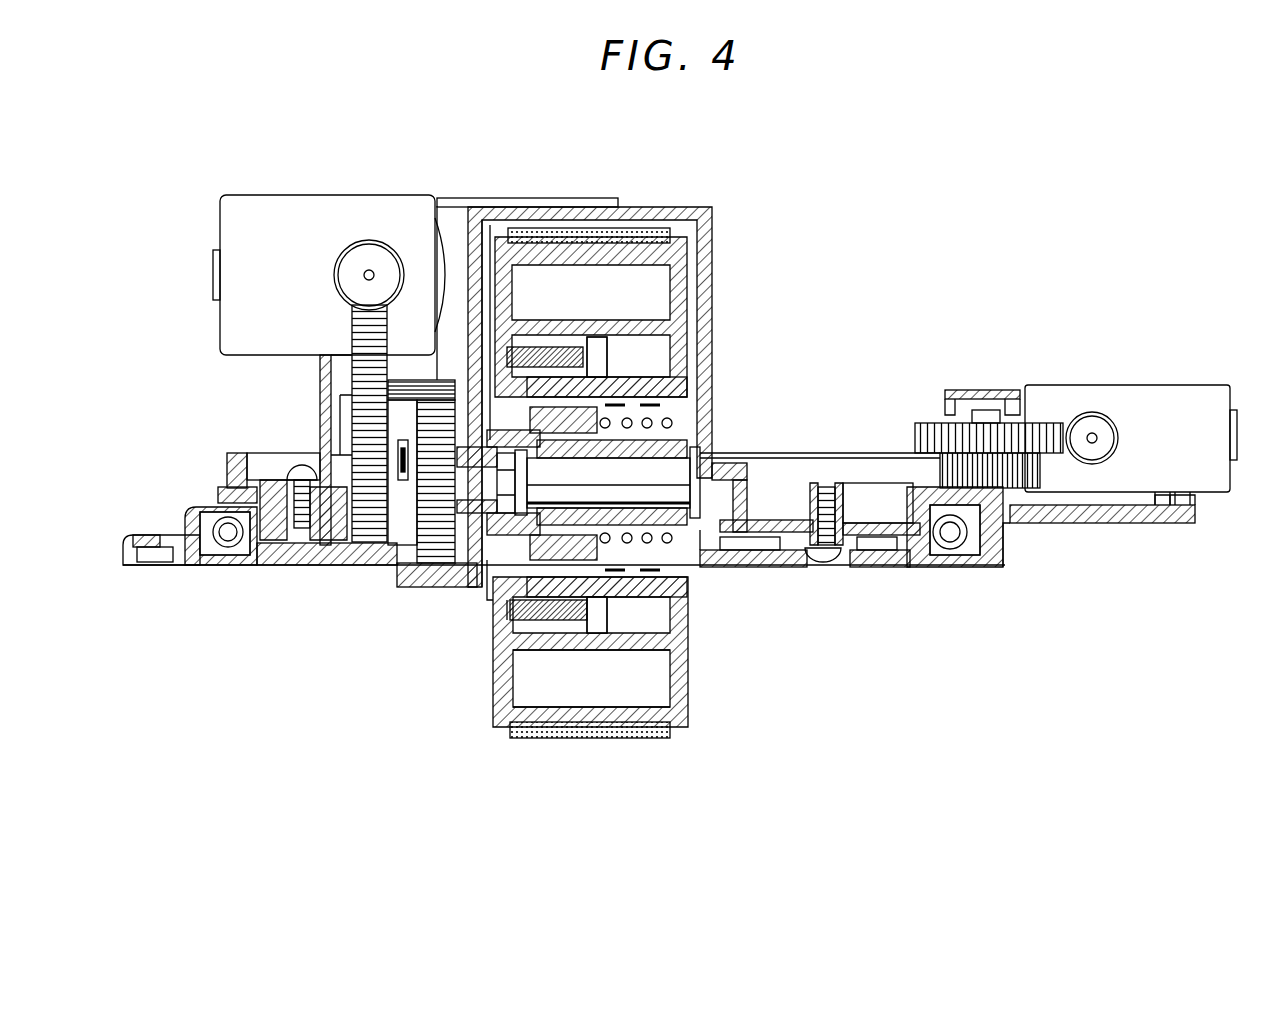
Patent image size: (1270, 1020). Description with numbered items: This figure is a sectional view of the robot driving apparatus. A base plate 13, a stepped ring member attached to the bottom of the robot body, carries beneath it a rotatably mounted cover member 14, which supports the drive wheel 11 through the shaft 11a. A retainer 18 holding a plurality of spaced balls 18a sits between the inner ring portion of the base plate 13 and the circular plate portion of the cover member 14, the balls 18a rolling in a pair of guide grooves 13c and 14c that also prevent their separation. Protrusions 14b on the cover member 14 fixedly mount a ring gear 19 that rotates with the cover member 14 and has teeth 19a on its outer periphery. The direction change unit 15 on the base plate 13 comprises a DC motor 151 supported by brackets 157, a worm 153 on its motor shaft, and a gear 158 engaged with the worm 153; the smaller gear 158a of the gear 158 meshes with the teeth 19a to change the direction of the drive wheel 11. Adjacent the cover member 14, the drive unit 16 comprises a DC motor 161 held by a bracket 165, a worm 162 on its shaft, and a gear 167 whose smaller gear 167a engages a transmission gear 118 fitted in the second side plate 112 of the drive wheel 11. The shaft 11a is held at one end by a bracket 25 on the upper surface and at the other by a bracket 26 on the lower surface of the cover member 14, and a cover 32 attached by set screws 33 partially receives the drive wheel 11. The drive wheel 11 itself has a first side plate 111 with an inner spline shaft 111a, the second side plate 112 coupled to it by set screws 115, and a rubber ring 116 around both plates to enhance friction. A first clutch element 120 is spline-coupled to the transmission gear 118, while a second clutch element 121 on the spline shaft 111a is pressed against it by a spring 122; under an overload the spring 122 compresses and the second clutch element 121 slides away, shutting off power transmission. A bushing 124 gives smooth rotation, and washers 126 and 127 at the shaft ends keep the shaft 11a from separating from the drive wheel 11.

The drive wheel 11 is at (702, 745).
The shaft 11a is at (723, 450).
The base plate 13 is at (130, 548).
The guide groove 13c is at (985, 570).
The cover member 14 is at (712, 255).
The protrusion 14b is at (870, 483).
The guide groove 14c is at (945, 570).
The direction change unit 15 is at (996, 322).
The drive unit 16 is at (210, 380).
The retainer 18 is at (262, 566).
The ball 18a is at (210, 567).
The ring gear 19 is at (247, 455).
The teeth 19a is at (230, 460).
The bracket 25 is at (395, 570).
The bracket 26 is at (827, 568).
The cover 32 is at (305, 566).
The set screw 33 is at (860, 565).
The first side plate 111 is at (688, 707).
The spline shaft 111a is at (612, 410).
The second side plate 112 is at (497, 600).
The set screw 115 is at (575, 725).
The rubber ring 116 is at (588, 236).
The transmission gear 118 is at (452, 566).
The first clutch element 120 is at (540, 640).
The second clutch element 121 is at (607, 377).
The spring 122 is at (660, 542).
The bushing 124 is at (507, 600).
The washer 126 is at (745, 575).
The washer 127 is at (425, 560).
The DC motor 151 is at (1175, 400).
The worm 153 is at (1092, 415).
The bracket 157 is at (945, 390).
The gear 158 is at (915, 425).
The smaller gear 158a is at (1040, 475).
The DC motor 161 is at (296, 215).
The worm 162 is at (392, 212).
The bracket 165 is at (355, 392).
The gear 167 is at (345, 566).
The smaller gear 167a is at (400, 357).